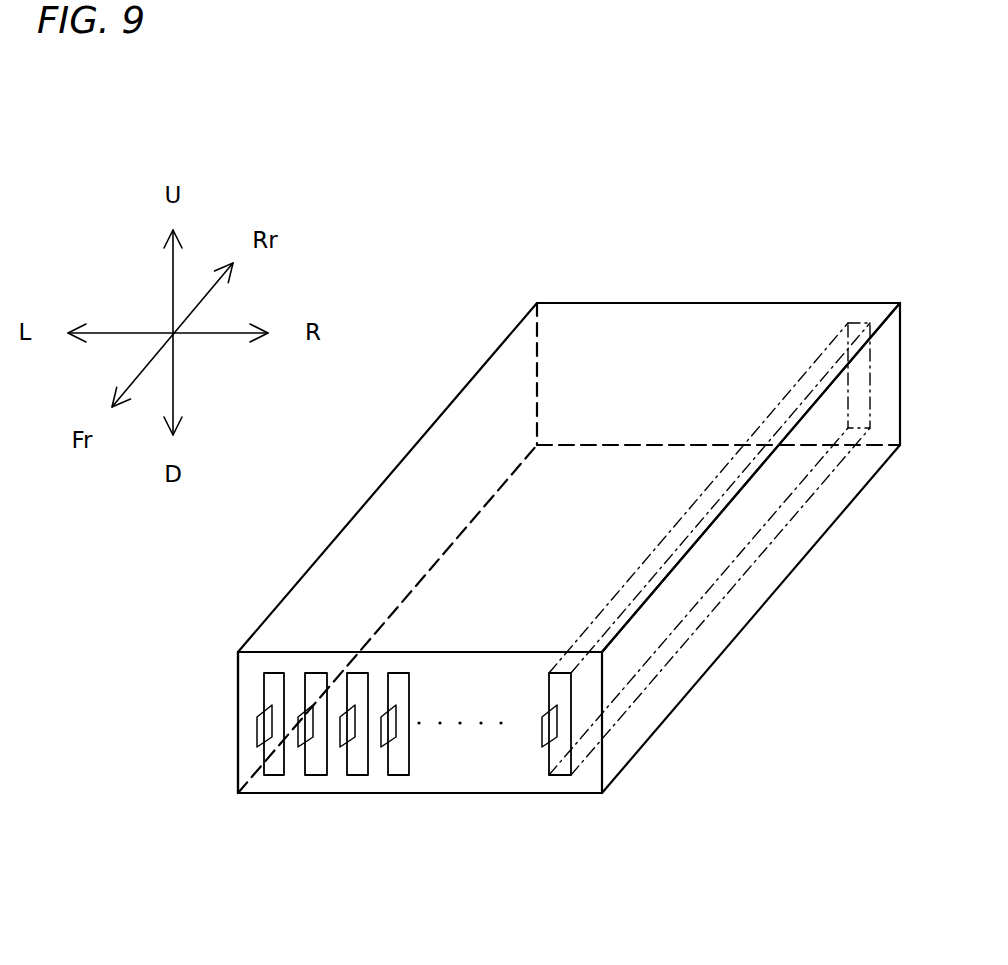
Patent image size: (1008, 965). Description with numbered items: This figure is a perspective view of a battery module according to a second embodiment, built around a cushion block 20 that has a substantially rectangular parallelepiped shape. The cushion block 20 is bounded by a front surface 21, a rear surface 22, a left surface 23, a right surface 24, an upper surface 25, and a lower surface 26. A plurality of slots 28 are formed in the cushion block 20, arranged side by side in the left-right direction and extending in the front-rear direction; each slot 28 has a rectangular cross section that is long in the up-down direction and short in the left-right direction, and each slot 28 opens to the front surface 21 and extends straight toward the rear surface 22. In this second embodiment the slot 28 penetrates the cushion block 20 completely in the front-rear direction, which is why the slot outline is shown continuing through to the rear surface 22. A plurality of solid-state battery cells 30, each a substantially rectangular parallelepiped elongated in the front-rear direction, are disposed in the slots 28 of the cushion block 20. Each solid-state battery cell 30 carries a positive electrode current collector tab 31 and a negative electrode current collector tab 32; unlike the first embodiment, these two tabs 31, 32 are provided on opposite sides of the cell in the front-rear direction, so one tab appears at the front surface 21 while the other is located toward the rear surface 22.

The cushion block 20 is at (504, 561).
The front surface 21 is at (440, 780).
The rear surface 22 is at (715, 313).
The left surface 23 is at (237, 687).
The right surface 24 is at (863, 452).
The upper surface 25 is at (533, 487).
The lower surface 26 is at (523, 795).
The slot 28 is at (442, 622).
The solid-state battery cell 30 is at (362, 773).
The positive electrode current collector tab 31 is at (343, 717).
The negative electrode current collector tab 32 is at (303, 733).